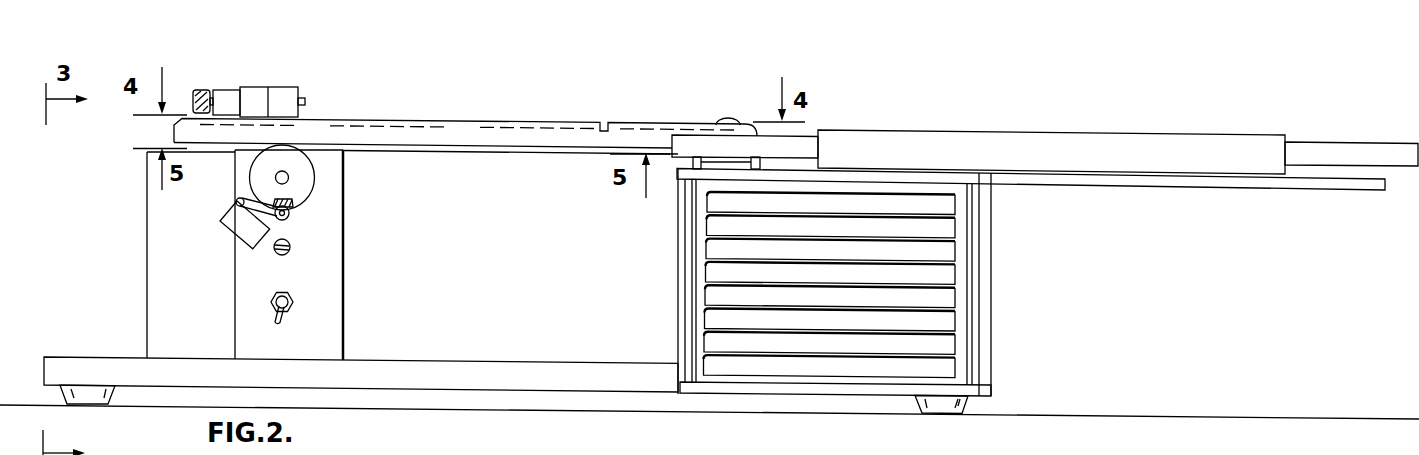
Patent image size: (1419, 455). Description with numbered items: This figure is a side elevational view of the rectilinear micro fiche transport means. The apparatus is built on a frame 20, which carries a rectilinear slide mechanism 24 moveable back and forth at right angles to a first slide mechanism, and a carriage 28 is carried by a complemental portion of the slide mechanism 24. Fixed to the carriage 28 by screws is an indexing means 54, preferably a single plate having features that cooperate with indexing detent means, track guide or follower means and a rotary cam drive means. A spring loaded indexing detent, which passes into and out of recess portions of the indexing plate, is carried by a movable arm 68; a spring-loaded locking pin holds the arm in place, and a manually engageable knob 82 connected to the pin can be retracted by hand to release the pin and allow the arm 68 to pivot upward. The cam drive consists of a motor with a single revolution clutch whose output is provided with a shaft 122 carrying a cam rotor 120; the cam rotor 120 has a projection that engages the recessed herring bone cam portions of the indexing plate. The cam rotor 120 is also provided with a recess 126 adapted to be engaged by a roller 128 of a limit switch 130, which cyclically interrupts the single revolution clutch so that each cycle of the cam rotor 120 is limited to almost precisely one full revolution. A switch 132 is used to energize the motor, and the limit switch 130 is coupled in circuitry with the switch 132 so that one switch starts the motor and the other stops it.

The frame 20 is at (137, 305).
The slide mechanism 24 is at (754, 166).
The carriage 28 is at (1321, 142).
The indexing means 54 is at (478, 132).
The movable arm 68 is at (253, 87).
The manually engageable knob 82 is at (203, 90).
The cam rotor 120 is at (302, 162).
The shaft 122 is at (289, 177).
The recess 126 is at (240, 190).
The roller 128 is at (290, 217).
The limit switch 130 is at (240, 230).
The switch 132 is at (297, 310).